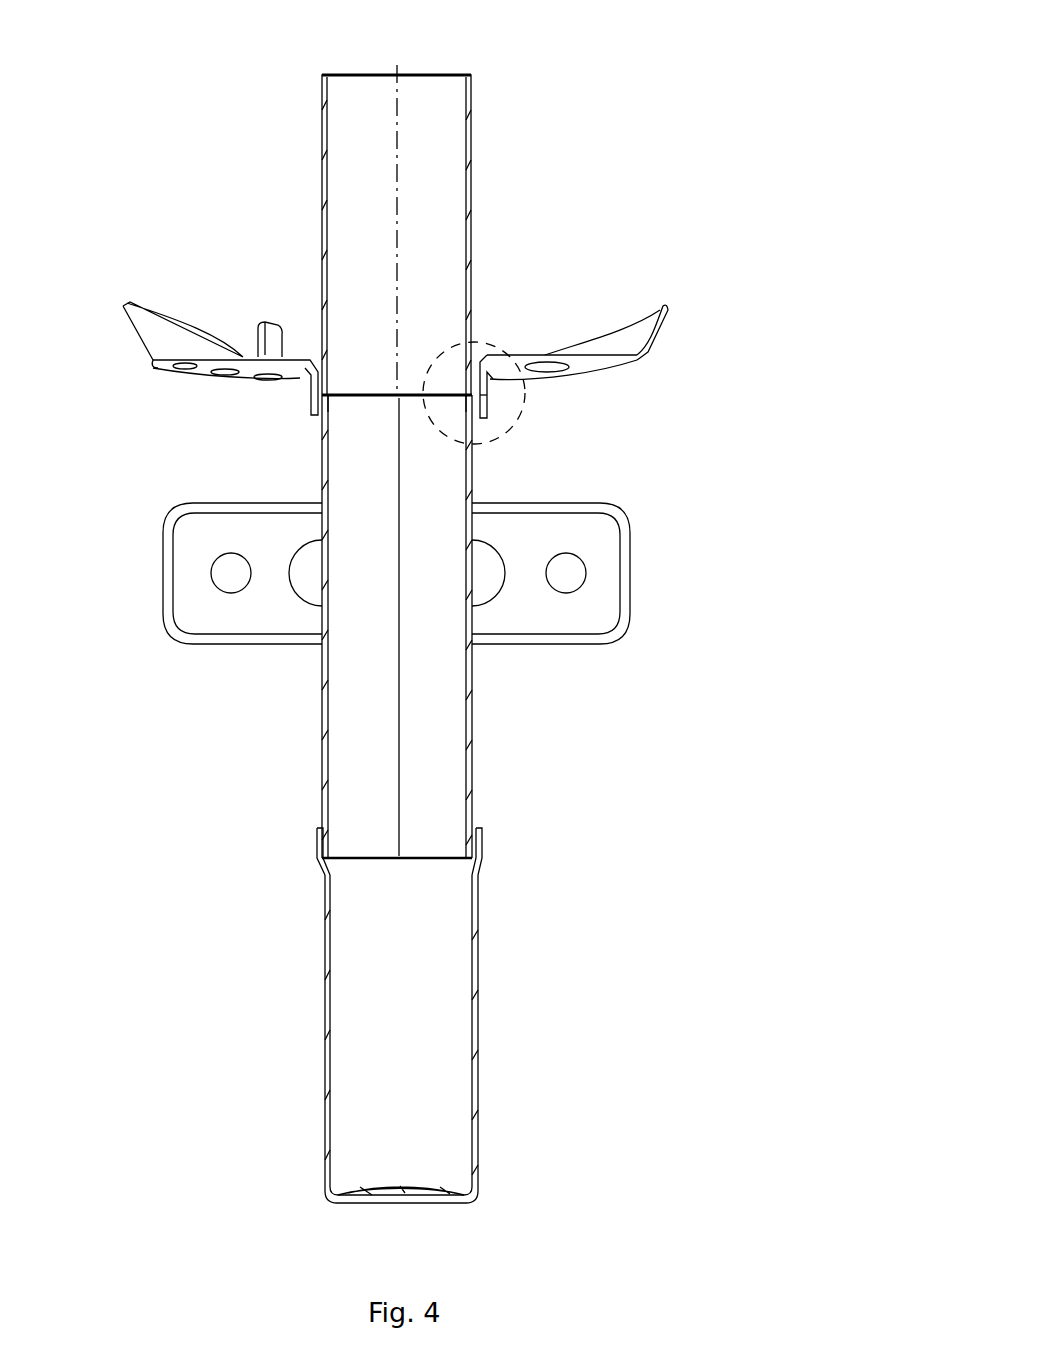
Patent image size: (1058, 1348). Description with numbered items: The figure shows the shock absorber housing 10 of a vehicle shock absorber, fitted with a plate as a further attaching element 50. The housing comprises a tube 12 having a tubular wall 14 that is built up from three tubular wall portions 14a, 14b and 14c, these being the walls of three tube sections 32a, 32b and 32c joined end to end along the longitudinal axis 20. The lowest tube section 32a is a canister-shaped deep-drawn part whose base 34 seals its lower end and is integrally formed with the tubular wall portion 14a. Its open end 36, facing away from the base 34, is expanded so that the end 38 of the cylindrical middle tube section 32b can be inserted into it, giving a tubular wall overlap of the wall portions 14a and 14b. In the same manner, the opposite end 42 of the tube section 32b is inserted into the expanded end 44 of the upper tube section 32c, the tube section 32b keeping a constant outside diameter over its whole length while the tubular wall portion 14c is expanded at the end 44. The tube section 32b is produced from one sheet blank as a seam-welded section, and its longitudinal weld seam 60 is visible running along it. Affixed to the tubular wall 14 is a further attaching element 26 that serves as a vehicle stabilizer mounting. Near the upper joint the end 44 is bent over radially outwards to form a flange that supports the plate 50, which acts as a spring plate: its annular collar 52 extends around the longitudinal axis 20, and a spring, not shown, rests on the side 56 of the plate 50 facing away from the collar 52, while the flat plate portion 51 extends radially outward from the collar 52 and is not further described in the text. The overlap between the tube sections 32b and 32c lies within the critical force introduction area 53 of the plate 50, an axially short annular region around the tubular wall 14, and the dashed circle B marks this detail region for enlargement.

The shock absorber housing 10 is at (722, 125).
The tube 12 is at (591, 191).
The tubular wall 14 is at (486, 904).
The tubular wall portion 14a is at (327, 1040).
The tubular wall portion 14b is at (322, 692).
The tubular wall portion 14c is at (465, 243).
The longitudinal axis 20 is at (397, 140).
The further attaching element 26 is at (213, 612).
The tube section 32a is at (445, 1008).
The tube section 32b is at (347, 795).
The tube section 32c is at (345, 257).
The base 34 is at (360, 1197).
The open end 36 is at (318, 838).
The end 38 is at (474, 838).
The end 42 is at (331, 404).
The end 44 is at (314, 400).
The further attaching element 50 is at (613, 346).
The bracket plate 51 is at (600, 375).
The annular collar 52 is at (490, 397).
The critical force introduction area 53 is at (498, 415).
The side 56 is at (575, 352).
The longitudinal weld seam 60 is at (400, 727).
The detail region B is at (497, 348).